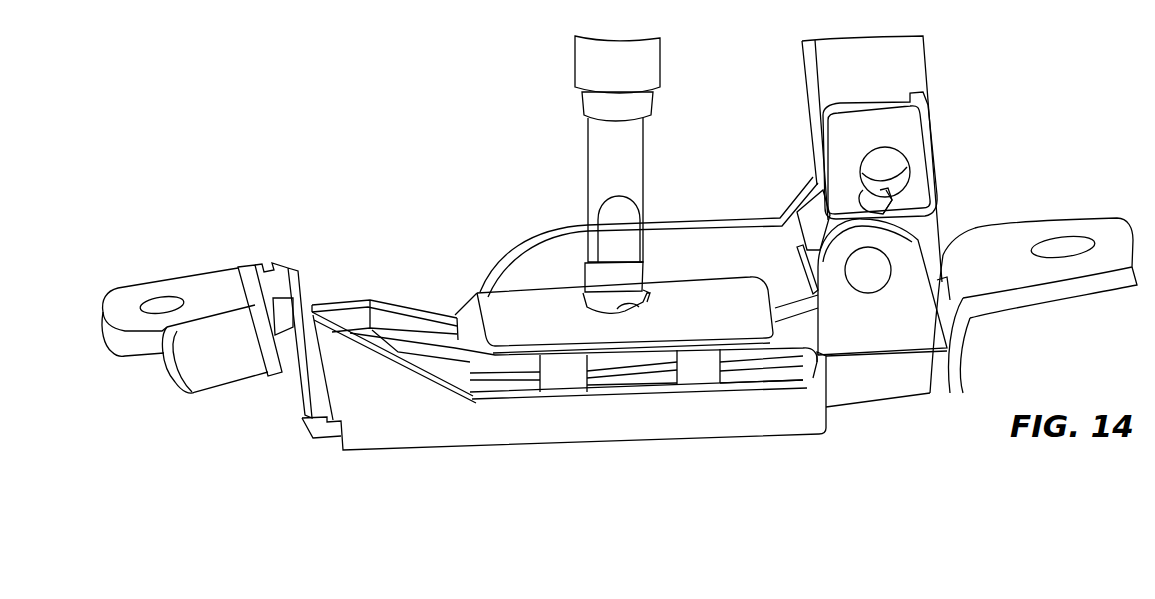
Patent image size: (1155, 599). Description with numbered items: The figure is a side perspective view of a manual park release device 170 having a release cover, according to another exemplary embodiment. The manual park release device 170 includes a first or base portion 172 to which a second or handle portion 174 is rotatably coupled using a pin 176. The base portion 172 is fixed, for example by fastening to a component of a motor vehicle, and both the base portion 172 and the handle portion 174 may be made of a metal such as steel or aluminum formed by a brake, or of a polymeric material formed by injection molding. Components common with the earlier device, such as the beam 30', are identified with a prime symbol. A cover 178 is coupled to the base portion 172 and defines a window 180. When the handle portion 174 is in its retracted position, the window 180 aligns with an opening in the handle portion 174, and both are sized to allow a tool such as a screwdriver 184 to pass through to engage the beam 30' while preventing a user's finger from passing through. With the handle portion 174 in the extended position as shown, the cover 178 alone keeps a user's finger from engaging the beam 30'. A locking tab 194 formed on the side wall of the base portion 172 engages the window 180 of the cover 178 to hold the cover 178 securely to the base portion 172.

The manual park release device 170 is at (1016, 167).
The base portion 172 is at (662, 417).
The handle portion 174 is at (900, 67).
The pin 176 is at (872, 278).
The cover 178 is at (497, 307).
The window 180 is at (637, 307).
The screwdriver 184 is at (640, 62).
The locking tab 194 is at (628, 278).
The beam 30' is at (460, 383).